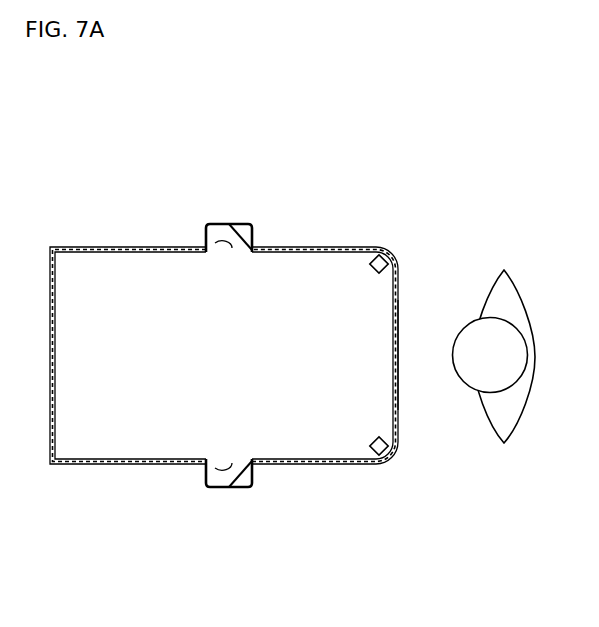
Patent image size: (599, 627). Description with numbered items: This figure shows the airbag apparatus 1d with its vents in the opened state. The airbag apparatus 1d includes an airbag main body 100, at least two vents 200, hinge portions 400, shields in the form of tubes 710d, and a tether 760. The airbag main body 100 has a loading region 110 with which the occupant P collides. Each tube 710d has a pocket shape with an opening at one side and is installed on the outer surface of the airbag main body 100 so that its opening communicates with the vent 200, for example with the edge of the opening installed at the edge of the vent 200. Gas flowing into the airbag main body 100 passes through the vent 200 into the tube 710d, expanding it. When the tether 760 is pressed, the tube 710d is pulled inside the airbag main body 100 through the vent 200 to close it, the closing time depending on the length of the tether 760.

The airbag apparatus 1d is at (64, 92).
The airbag main body 100 is at (100, 247).
The loading region 110 is at (395, 338).
The vent 200 is at (232, 247).
The hinge portion 400 is at (381, 252).
The tube 710d is at (216, 224).
The tether 760 is at (246, 224).
The occupant P is at (500, 288).